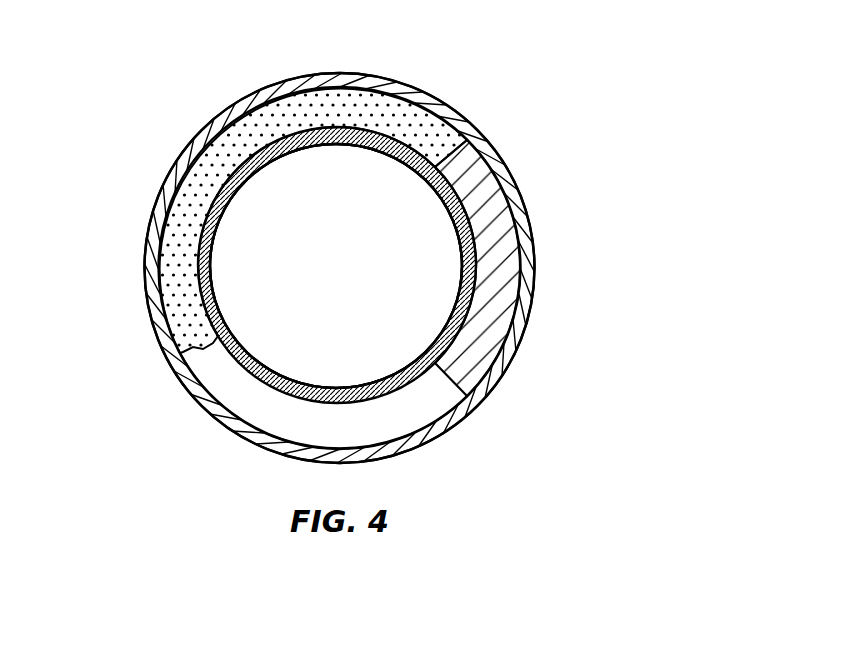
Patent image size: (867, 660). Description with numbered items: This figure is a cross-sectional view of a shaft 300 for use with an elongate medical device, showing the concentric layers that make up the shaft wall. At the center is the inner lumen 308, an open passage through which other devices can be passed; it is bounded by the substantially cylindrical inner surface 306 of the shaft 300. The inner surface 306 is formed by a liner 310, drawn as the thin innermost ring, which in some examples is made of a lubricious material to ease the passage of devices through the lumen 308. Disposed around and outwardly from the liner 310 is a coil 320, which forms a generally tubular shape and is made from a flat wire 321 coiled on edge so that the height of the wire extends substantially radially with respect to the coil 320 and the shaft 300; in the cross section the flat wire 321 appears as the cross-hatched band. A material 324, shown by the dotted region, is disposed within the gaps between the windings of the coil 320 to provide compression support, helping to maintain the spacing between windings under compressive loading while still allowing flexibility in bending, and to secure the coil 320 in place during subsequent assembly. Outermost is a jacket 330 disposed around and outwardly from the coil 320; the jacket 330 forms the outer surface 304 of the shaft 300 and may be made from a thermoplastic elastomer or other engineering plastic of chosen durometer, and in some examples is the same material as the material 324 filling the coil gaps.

The shaft 300 is at (474, 77).
The outer surface 304 is at (146, 254).
The jacket 330 is at (149, 271).
The material 324 is at (173, 309).
The coil 320 is at (512, 268).
The flat wire 321 is at (423, 415).
The liner 310 is at (247, 372).
The inner surface 306 is at (218, 220).
The inner lumen 308 is at (303, 218).